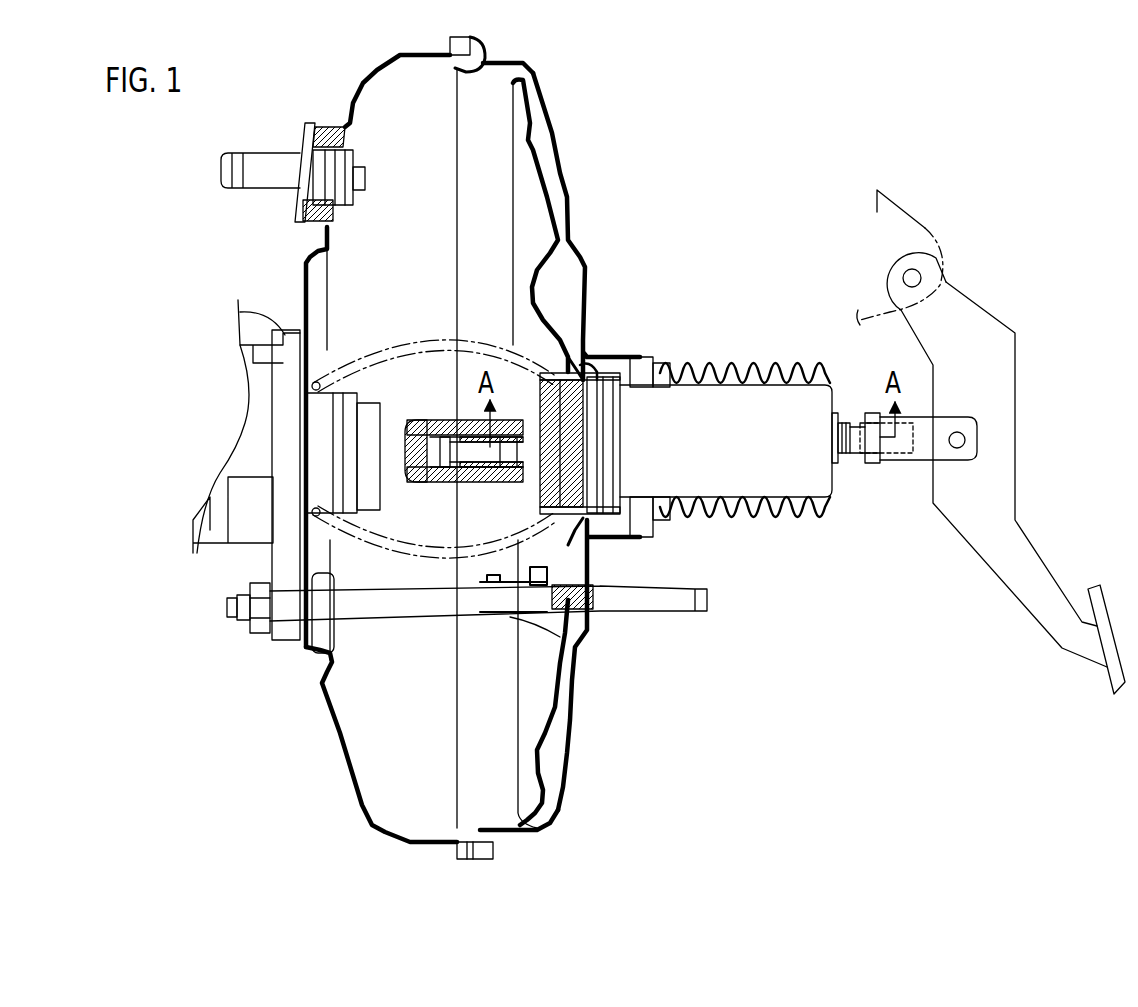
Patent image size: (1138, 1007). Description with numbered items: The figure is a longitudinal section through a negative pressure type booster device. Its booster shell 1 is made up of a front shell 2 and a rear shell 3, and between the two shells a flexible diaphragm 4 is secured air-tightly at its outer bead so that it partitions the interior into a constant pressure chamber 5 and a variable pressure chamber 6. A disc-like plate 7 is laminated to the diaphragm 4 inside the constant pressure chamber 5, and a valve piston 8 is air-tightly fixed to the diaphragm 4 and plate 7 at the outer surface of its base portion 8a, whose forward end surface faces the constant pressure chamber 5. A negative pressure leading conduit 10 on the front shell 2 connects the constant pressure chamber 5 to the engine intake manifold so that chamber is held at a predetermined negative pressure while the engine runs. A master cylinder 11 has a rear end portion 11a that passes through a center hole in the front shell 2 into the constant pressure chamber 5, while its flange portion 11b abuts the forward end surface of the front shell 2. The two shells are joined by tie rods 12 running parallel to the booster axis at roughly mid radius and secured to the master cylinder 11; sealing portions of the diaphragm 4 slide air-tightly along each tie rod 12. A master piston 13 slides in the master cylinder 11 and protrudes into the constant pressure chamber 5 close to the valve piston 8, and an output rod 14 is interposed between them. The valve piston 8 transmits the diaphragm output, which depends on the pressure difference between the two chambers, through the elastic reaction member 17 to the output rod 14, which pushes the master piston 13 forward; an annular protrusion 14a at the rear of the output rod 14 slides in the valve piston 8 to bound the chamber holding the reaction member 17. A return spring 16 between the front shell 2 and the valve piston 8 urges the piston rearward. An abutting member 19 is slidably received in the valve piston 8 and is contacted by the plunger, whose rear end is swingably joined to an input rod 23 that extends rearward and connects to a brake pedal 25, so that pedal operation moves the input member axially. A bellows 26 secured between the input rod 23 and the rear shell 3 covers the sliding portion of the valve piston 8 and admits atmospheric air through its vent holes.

The booster shell 1 is at (577, 177).
The front shell 2 is at (350, 110).
The rear shell 3 is at (533, 110).
The flexible diaphragm 4 is at (543, 112).
The constant pressure chamber 5 is at (410, 113).
The variable pressure chamber 6 is at (562, 267).
The disc-like plate 7 is at (530, 95).
The valve piston 8 is at (722, 397).
The base portion 8a is at (593, 357).
The negative pressure leading conduit 10 is at (263, 170).
The master cylinder 11 is at (267, 563).
The rear end portion 11a is at (320, 428).
The flange portion 11b is at (285, 523).
The tie rod 12 is at (387, 613).
The master piston 13 is at (390, 473).
The output rod 14 is at (483, 437).
The annular protrusion 14a is at (515, 512).
The return spring 16 is at (565, 340).
The reaction member 17 is at (543, 470).
The abutting member 19 is at (583, 450).
The input rod 23 is at (837, 457).
The brake pedal 25 is at (990, 552).
The bellows 26 is at (800, 363).